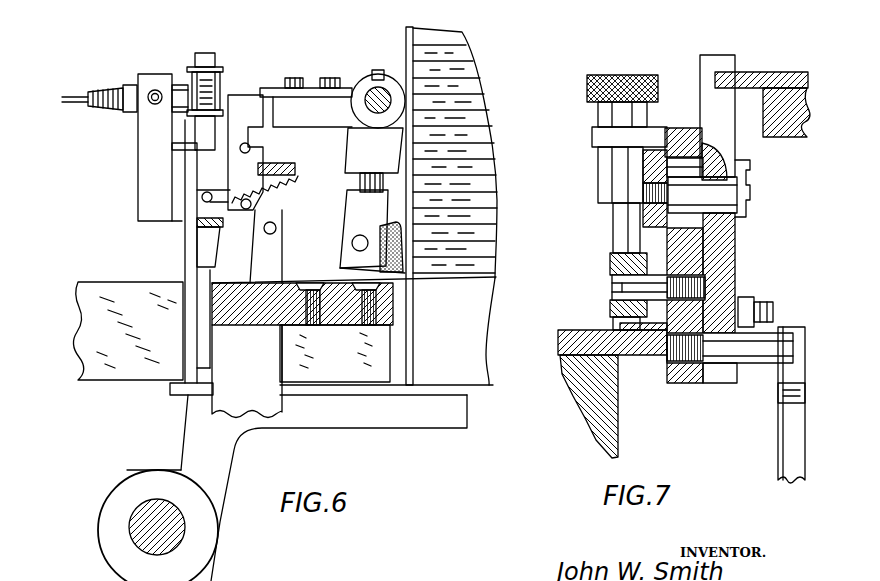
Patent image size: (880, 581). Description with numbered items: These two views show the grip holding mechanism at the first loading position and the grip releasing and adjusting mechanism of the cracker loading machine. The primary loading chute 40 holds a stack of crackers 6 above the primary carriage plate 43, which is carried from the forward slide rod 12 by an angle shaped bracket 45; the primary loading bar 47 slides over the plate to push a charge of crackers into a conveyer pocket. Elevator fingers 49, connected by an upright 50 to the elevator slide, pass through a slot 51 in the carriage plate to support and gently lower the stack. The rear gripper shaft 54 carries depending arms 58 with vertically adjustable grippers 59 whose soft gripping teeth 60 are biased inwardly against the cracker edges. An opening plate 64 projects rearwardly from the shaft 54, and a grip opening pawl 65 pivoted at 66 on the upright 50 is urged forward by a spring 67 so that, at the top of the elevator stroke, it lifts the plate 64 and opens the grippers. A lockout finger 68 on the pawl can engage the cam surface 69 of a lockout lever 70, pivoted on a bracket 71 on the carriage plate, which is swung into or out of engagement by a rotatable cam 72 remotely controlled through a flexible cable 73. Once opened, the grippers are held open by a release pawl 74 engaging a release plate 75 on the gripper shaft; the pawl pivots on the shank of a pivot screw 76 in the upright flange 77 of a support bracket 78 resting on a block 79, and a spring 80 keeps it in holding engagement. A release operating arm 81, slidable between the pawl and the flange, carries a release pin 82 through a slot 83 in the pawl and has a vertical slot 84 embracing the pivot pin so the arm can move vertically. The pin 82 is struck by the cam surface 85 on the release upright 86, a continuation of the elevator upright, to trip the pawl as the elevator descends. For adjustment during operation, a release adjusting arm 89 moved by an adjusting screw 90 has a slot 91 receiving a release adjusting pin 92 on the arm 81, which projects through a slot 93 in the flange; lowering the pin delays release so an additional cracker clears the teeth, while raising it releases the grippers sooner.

In FIG. 6, the crackers 6 is at (468, 93).
In FIG. 6, the slide rod 12 is at (130, 527).
In FIG. 6, the primary loading chute 40 is at (413, 28).
In FIG. 6, the primary carriage plate 43 is at (170, 390).
In FIG. 6, the angle shaped bracket 45 is at (192, 450).
In FIG. 6, the primary loading bar 47 is at (97, 318).
In FIG. 6, the elevator fingers 49 is at (455, 287).
In FIG. 6, the upright 50 is at (293, 405).
In FIG. 6, the slot 51 is at (468, 390).
In FIG. 6, the rear gripper shaft 54 is at (386, 78).
In FIG. 6, the depending arm 58 is at (353, 180).
In FIG. 6, the gripper 59 is at (358, 202).
In FIG. 6, the gripping teeth 60 is at (378, 255).
In FIG. 6, the opening plate 64 is at (263, 93).
In FIG. 6, the grip opening pawl 65 is at (270, 162).
In FIG. 6, the pivot 66 is at (252, 146).
In FIG. 6, the spring 67 is at (280, 195).
In FIG. 6, the lockout finger 68 is at (207, 200).
In FIG. 6, the cam surface 69 is at (218, 243).
In FIG. 6, the lockout lever 70 is at (207, 167).
In FIG. 6, the bracket 71 is at (188, 251).
In FIG. 6, the rotatable cam 72 is at (223, 77).
In FIG. 6, the flexible cable 73 is at (111, 110).
In FIG. 7, the release pawl 74 is at (712, 55).
In FIG. 7, the release plate 75 is at (750, 73).
In FIG. 7, the pivot screw 76 is at (750, 178).
In FIG. 7, the upright flange 77 is at (643, 168).
In FIG. 7, the support bracket 78 is at (570, 322).
In FIG. 7, the block 79 is at (583, 382).
In FIG. 7, the spring 80 is at (750, 300).
In FIG. 7, the release operating arm 81 is at (693, 246).
In FIG. 7, the release pin 82 is at (765, 365).
In FIG. 7, the slot 83 is at (717, 380).
In FIG. 7, the vertical slot 84 is at (735, 207).
In FIG. 7, the cam surface 85 is at (778, 403).
In FIG. 7, the release upright 86 is at (787, 447).
In FIG. 7, the release adjusting arm 89 is at (612, 262).
In FIG. 7, the adjusting screw 90 is at (612, 73).
In FIG. 7, the slot 91 is at (612, 281).
In FIG. 7, the release adjusting pin 92 is at (622, 290).
In FIG. 7, the slot 93 is at (652, 240).